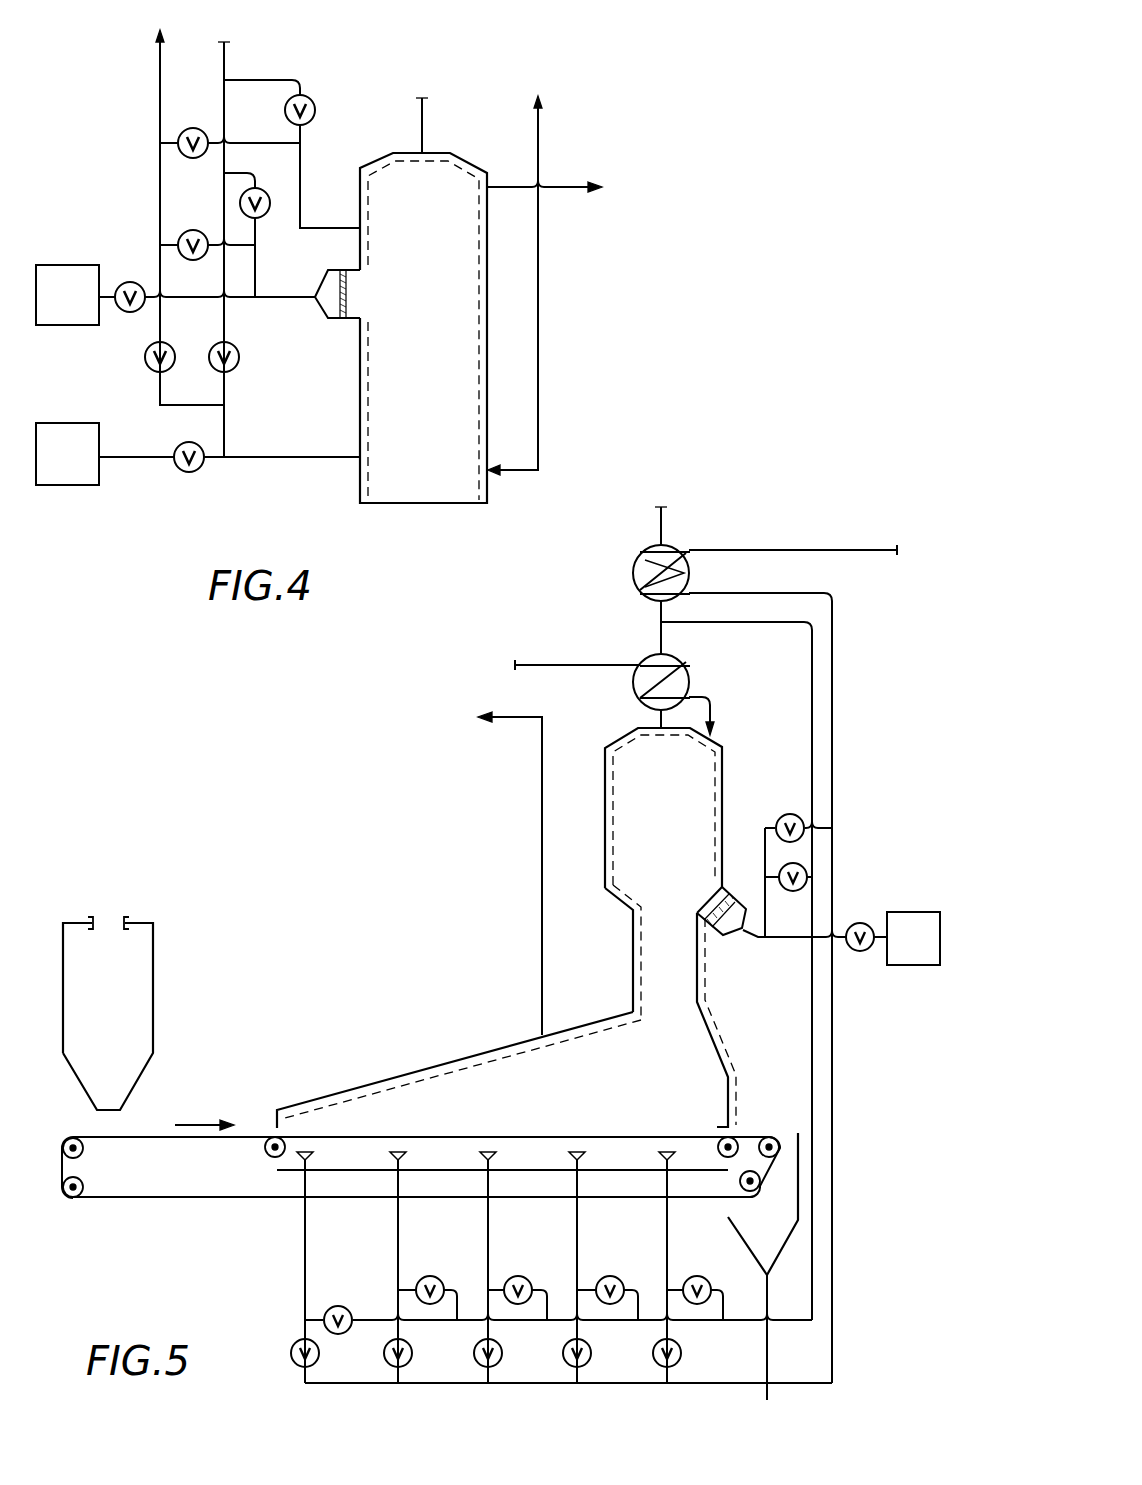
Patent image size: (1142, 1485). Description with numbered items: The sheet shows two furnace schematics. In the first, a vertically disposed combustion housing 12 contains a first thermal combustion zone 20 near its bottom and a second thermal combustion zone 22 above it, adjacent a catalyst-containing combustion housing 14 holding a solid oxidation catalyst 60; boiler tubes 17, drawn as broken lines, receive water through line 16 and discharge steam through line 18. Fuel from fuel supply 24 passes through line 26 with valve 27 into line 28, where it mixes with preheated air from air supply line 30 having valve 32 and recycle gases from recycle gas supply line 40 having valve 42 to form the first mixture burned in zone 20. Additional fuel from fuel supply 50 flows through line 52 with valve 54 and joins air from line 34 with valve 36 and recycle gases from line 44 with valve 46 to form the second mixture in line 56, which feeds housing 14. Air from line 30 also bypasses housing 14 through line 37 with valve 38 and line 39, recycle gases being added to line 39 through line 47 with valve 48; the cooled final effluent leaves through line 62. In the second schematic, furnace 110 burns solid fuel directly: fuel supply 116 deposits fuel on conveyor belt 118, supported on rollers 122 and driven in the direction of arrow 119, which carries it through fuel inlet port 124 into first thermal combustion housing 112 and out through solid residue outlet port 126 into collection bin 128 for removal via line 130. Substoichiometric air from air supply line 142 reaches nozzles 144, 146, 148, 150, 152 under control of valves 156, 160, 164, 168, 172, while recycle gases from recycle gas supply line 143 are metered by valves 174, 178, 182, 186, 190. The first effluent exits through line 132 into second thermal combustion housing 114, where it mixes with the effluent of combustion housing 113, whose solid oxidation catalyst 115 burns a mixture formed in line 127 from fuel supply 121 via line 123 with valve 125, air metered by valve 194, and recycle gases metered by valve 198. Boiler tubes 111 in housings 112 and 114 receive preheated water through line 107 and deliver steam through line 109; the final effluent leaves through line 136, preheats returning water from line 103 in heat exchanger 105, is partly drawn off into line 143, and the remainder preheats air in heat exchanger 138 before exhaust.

In FIG. 4, the combustion housing 12 is at (360, 422).
In FIG. 4, the catalyst-containing combustion housing 14 is at (316, 304).
In FIG. 4, the line 16 is at (540, 150).
In FIG. 4, the boiler tubes 17 is at (387, 160).
In FIG. 4, the line 18 is at (572, 192).
In FIG. 4, the first thermal combustion zone 20 is at (436, 474).
In FIG. 4, the second thermal combustion zone 22 is at (430, 308).
In FIG. 4, the fuel supply 24 is at (68, 423).
In FIG. 4, the line 26 is at (124, 459).
In FIG. 4, the valve 27 is at (185, 472).
In FIG. 4, the line 28 is at (275, 459).
In FIG. 4, the air supply line 30 is at (160, 100).
In FIG. 4, the valve 32 is at (145, 357).
In FIG. 4, the line 34 is at (168, 245).
In FIG. 4, the valve 36 is at (186, 297).
In FIG. 4, the line 37 is at (168, 143).
In FIG. 4, the valve 38 is at (205, 133).
In FIG. 4, the line 39 is at (347, 228).
In FIG. 4, the recycle gas supply line 40 is at (224, 58).
In FIG. 4, the valve 42 is at (232, 366).
In FIG. 4, the line 44 is at (240, 173).
In FIG. 4, the valve 46 is at (262, 215).
In FIG. 4, the line 47 is at (262, 80).
In FIG. 4, the valve 48 is at (310, 104).
In FIG. 4, the fuel supply 50 is at (68, 265).
In FIG. 4, the line 52 is at (124, 285).
In FIG. 4, the valve 54 is at (147, 260).
In FIG. 4, the line 56 is at (262, 299).
In FIG. 4, the solid oxidation catalyst 60 is at (341, 322).
In FIG. 4, the line 62 is at (428, 112).
In FIG. 5, the line 103 is at (588, 665).
In FIG. 5, the heat exchanger 105 is at (695, 672).
In FIG. 5, the line 107 is at (714, 712).
In FIG. 5, the line 109 is at (542, 805).
In FIG. 5, the furnace 110 is at (395, 977).
In FIG. 5, the boiler tubes 111 is at (605, 772).
In FIG. 5, the first thermal combustion housing 112 is at (345, 1091).
In FIG. 5, the combustion housing 113 is at (740, 940).
In FIG. 5, the second thermal combustion housing 114 is at (605, 852).
In FIG. 5, the solid oxidation catalyst 115 is at (703, 935).
In FIG. 5, the fuel supply 116 is at (153, 968).
In FIG. 5, the conveyor belt 118 is at (78, 1137).
In FIG. 5, the arrow 119 is at (178, 1125).
In FIG. 5, the fuel supply 121 is at (912, 912).
In FIG. 5, the rollers 122 is at (62, 1165).
In FIG. 5, the line 123 is at (880, 950).
In FIG. 5, the fuel inlet port 124 is at (272, 1135).
In FIG. 5, the valve 125 is at (856, 924).
In FIG. 5, the solid residue outlet port 126 is at (730, 1125).
In FIG. 5, the line 127 is at (805, 942).
In FIG. 5, the collection bin 128 is at (780, 1262).
In FIG. 5, the line 130 is at (770, 1355).
In FIG. 5, the line 132 is at (633, 945).
In FIG. 5, the line 136 is at (664, 528).
In FIG. 5, the heat exchanger 138 is at (633, 573).
In FIG. 5, the air supply line 142 is at (835, 700).
In FIG. 5, the recycle gas supply line 143 is at (812, 658).
In FIG. 5, the nozzle 144 is at (311, 1156).
In FIG. 5, the nozzle 146 is at (404, 1156).
In FIG. 5, the nozzle 148 is at (494, 1156).
In FIG. 5, the nozzle 150 is at (583, 1156).
In FIG. 5, the nozzle 152 is at (673, 1156).
In FIG. 5, the valve 156 is at (320, 1355).
In FIG. 5, the valve 160 is at (413, 1355).
In FIG. 5, the valve 164 is at (503, 1355).
In FIG. 5, the valve 168 is at (592, 1355).
In FIG. 5, the valve 172 is at (683, 1355).
In FIG. 5, the valve 174 is at (355, 1290).
In FIG. 5, the valve 178 is at (438, 1276).
In FIG. 5, the valve 182 is at (526, 1276).
In FIG. 5, the valve 186 is at (618, 1276).
In FIG. 5, the valve 190 is at (705, 1276).
In FIG. 5, the valve 194 is at (800, 808).
In FIG. 5, the valve 198 is at (786, 891).